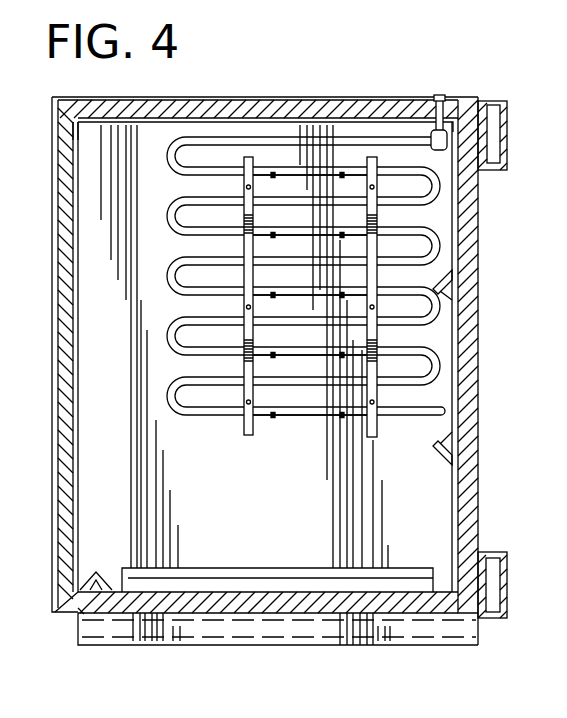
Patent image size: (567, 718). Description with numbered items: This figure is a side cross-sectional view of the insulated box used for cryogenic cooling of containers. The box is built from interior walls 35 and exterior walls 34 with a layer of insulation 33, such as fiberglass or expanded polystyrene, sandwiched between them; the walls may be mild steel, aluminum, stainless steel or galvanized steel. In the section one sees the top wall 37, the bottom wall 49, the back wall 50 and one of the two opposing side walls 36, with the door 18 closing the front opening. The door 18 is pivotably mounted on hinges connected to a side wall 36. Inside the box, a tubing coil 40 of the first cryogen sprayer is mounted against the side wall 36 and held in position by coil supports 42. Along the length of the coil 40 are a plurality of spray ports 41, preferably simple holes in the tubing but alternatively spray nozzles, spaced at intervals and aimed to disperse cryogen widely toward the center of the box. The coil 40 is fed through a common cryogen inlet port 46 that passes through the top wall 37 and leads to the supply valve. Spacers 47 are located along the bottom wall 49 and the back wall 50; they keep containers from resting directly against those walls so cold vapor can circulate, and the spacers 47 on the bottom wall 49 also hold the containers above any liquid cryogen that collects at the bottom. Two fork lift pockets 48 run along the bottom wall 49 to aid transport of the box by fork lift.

The door 18 is at (52, 240).
The insulation 33 is at (215, 112).
The exterior walls 34 is at (270, 100).
The interior walls 35 is at (160, 126).
The side walls 36 is at (112, 423).
The top wall 37 is at (333, 100).
The tubing coils 40 is at (440, 191).
The spray ports 41 is at (290, 215).
The coil supports 42 is at (365, 433).
The cryogen inlet port 46 is at (443, 108).
The spacers 47 is at (437, 284).
The fork lift pockets 48 is at (507, 135).
The bottom wall 49 is at (78, 613).
The back wall 50 is at (478, 268).